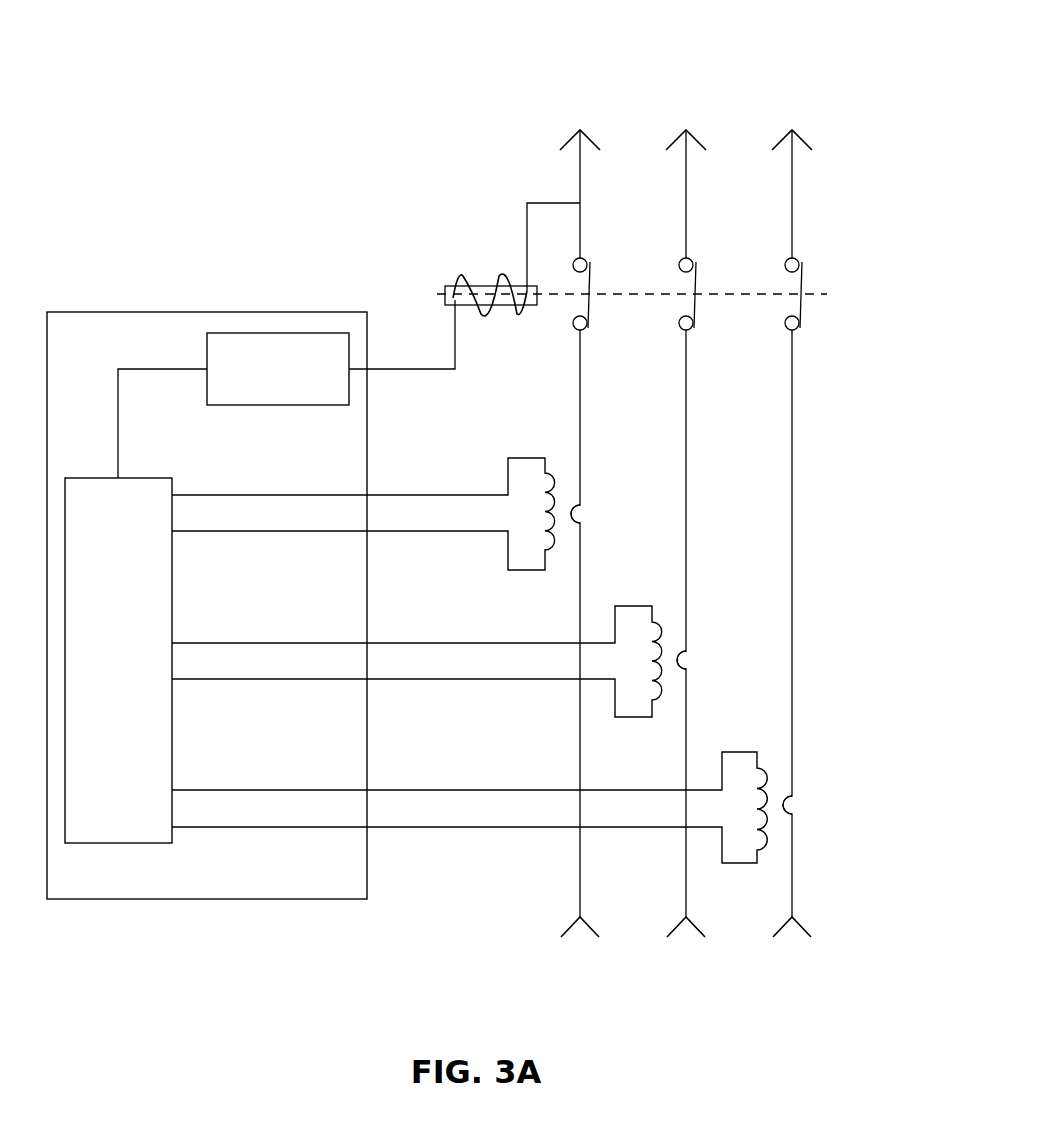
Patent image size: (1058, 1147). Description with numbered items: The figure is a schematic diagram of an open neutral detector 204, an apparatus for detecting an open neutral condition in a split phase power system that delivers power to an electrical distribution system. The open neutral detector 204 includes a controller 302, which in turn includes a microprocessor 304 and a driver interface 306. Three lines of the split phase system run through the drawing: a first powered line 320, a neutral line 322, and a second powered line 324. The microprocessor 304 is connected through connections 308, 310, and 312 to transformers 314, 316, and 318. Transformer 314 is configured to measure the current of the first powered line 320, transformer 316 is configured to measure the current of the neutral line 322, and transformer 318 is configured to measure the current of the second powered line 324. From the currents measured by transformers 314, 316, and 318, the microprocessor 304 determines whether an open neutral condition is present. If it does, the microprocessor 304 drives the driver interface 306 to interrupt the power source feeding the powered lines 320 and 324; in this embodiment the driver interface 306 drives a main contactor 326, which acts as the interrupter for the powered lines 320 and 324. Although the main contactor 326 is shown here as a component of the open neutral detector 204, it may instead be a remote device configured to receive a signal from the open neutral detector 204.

The open neutral detector 204 is at (463, 496).
The controller 302 is at (207, 586).
The microprocessor 304 is at (118, 660).
The driver interface 306 is at (233, 405).
The connection 308 is at (363, 507).
The connection 310 is at (417, 655).
The connection 312 is at (469, 802).
The transformer 314 is at (609, 514).
The transformer 316 is at (718, 657).
The transformer 318 is at (824, 802).
The line 320 is at (598, 515).
The line 322 is at (704, 515).
The line 324 is at (816, 515).
The main contactor 326 is at (464, 286).